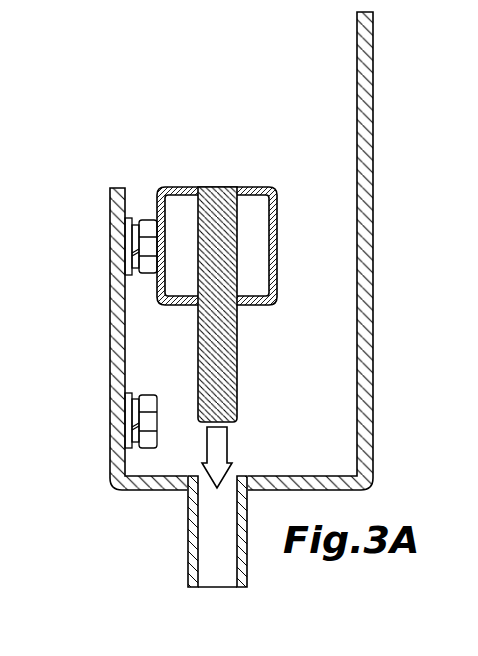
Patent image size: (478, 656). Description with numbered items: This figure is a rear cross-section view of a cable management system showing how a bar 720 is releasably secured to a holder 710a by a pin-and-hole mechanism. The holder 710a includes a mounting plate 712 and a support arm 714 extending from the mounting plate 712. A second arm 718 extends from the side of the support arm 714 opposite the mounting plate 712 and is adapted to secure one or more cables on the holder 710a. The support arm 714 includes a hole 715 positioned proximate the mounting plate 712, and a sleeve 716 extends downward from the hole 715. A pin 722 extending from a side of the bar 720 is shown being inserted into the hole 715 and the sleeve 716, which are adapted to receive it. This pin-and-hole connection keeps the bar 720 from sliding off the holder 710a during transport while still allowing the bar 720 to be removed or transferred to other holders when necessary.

The holder 710a is at (374, 297).
The mounting plate 712 is at (110, 327).
The support arm 714 is at (172, 490).
The hole 715 is at (233, 476).
The sleeve 716 is at (188, 560).
The second arm 718 is at (370, 127).
The bar 720 is at (253, 187).
The pin 722 is at (237, 352).